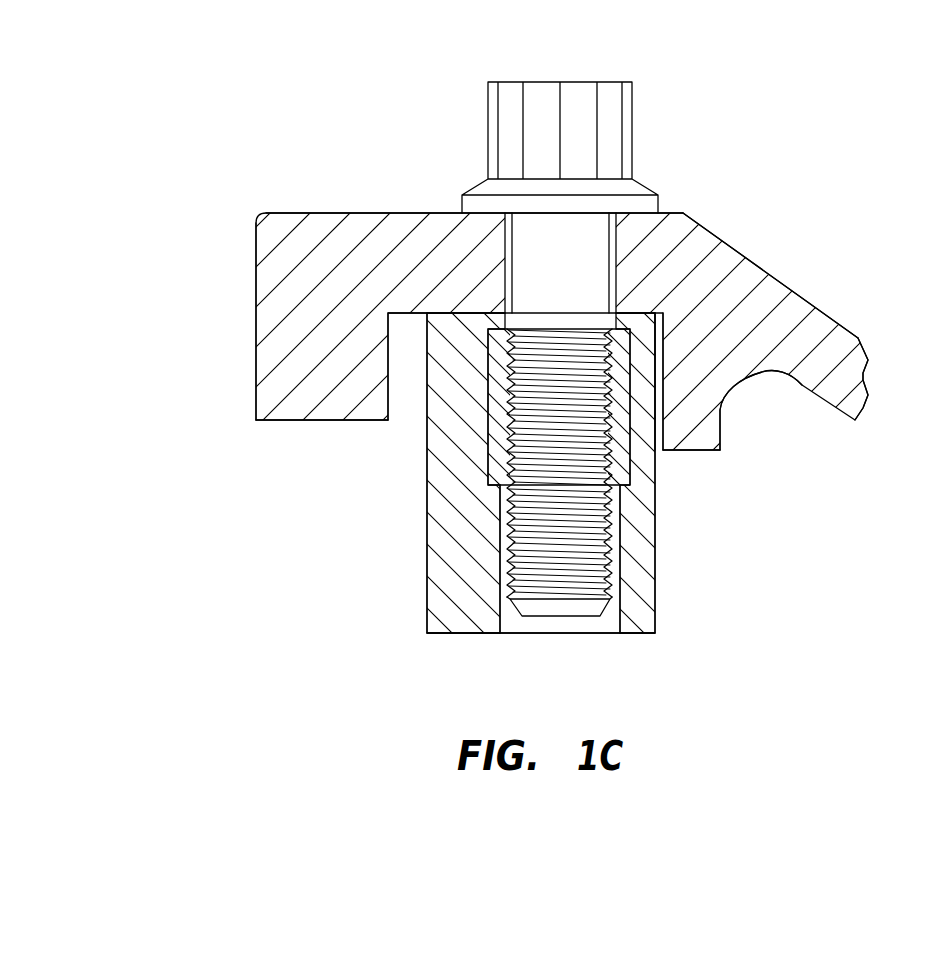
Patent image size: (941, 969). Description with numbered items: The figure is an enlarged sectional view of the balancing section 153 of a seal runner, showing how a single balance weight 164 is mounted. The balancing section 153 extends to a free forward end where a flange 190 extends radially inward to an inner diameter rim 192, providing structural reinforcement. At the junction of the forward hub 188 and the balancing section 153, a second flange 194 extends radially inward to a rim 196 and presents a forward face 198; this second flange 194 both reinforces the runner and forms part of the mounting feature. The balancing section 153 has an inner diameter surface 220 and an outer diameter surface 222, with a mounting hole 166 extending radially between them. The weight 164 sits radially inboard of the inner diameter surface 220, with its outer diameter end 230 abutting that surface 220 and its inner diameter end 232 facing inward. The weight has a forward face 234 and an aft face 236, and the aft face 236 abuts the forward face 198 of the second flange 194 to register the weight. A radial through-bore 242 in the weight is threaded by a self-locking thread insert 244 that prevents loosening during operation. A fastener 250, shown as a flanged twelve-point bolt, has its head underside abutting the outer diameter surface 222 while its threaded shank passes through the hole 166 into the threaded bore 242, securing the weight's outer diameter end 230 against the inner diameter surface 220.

The balancing section 153 is at (397, 260).
The outer diameter surface 222 is at (430, 213).
The fastener 250 is at (657, 123).
The mounting hole 166 is at (563, 272).
The outer diameter surface 230 is at (637, 311).
The forward hub 188 is at (851, 363).
The forward face 198 is at (660, 386).
The second flange 194 is at (698, 429).
The rim 196 is at (690, 450).
The flange 190 is at (288, 352).
The inner diameter surface 220 is at (455, 315).
The inner diameter rim 192 is at (330, 421).
The self-locking thread insert 244 is at (492, 440).
The forward face 234 is at (427, 587).
The aft face 236 is at (655, 546).
The weight 164 is at (642, 587).
The inner diameter surface 232 is at (638, 633).
The radial bore 242 is at (523, 636).